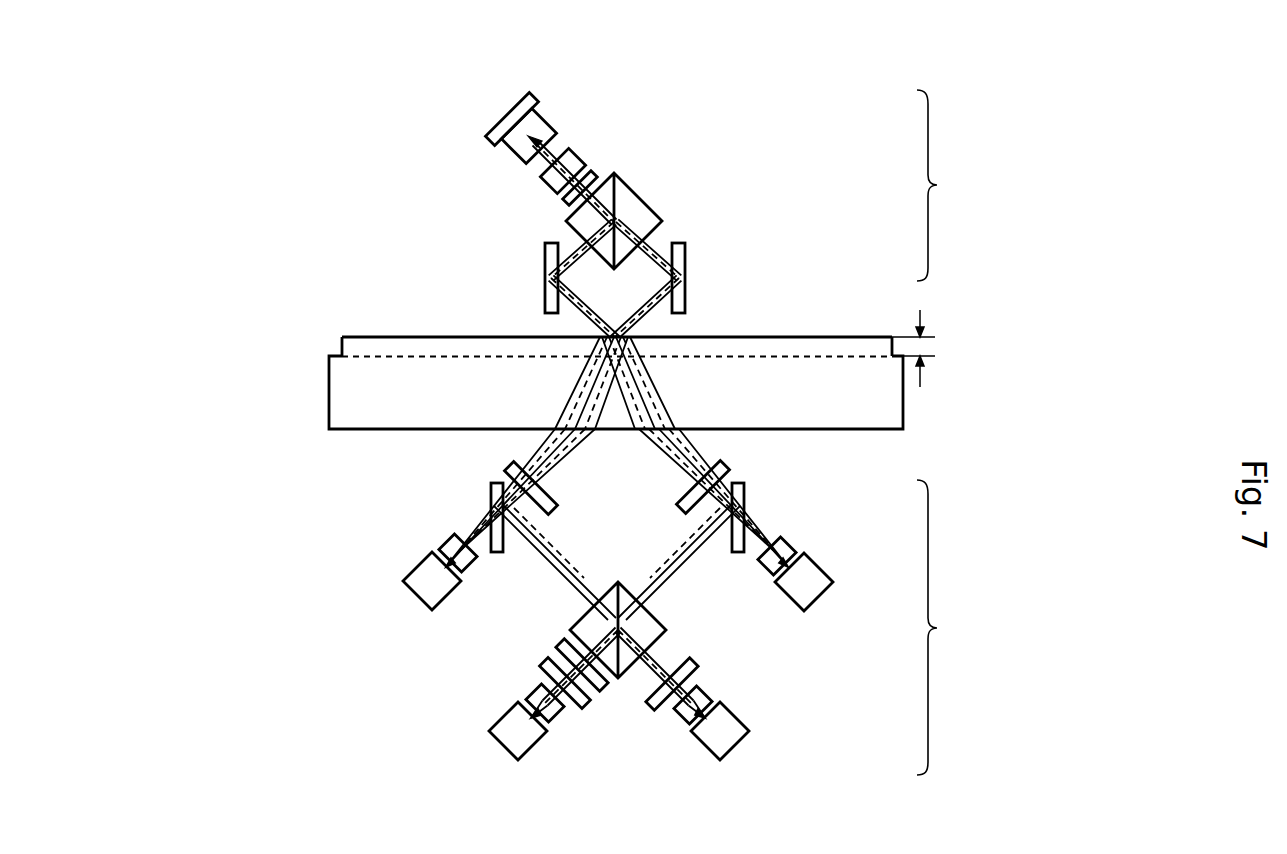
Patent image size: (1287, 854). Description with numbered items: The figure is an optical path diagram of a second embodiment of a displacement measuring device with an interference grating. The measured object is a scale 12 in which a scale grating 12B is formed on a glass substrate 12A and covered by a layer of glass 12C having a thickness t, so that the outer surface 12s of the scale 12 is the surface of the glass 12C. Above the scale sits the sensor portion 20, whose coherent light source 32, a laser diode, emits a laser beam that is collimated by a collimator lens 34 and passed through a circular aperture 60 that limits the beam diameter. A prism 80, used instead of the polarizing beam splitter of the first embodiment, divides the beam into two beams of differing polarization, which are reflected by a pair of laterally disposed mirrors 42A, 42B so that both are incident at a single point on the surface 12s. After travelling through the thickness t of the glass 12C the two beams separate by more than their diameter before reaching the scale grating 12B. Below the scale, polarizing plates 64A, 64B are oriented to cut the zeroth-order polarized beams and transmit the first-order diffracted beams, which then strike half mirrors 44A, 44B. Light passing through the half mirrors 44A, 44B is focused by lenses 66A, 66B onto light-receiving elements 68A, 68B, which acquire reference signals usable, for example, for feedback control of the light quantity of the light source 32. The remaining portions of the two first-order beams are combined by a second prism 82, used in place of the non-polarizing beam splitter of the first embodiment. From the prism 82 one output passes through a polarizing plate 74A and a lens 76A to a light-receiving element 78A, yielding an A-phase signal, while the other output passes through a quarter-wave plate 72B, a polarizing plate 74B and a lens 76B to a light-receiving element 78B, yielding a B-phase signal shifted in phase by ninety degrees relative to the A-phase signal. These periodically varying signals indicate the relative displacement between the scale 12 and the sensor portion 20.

The scale 12 is at (97, 203).
The glass substrate 12A is at (360, 420).
The scale grating 12B is at (340, 354).
The glass 12C is at (494, 280).
The surface of the scale 12s is at (757, 337).
The sensor portion 20 is at (957, 185).
The coherent light source 32 is at (537, 93).
The collimator lens 34 is at (580, 157).
The circular aperture 60 is at (593, 177).
The prism 80 is at (645, 197).
The mirror 42A is at (545, 253).
The mirror 42B is at (685, 247).
The polarizing plate 64A is at (730, 463).
The polarizing plate 64B is at (503, 464).
The half mirror 44A is at (746, 497).
The half mirror 44B is at (491, 500).
The lens 66A is at (789, 543).
The lens 66B is at (442, 537).
The light-receiving element 68A is at (817, 594).
The light-receiving element 68B is at (425, 598).
The prism 82 is at (662, 627).
The quarter-wave plate 72B is at (601, 689).
The polarizing plate 74A is at (695, 665).
The polarizing plate 74B is at (584, 698).
The lens 76A is at (712, 696).
The lens 76B is at (558, 723).
The light-receiving element 78A is at (748, 729).
The light-receiving element 78B is at (500, 738).